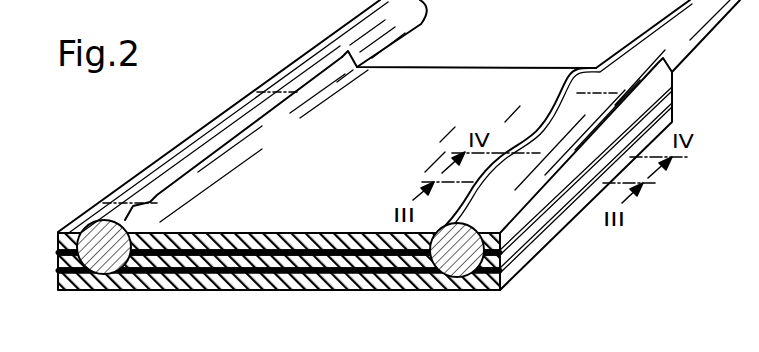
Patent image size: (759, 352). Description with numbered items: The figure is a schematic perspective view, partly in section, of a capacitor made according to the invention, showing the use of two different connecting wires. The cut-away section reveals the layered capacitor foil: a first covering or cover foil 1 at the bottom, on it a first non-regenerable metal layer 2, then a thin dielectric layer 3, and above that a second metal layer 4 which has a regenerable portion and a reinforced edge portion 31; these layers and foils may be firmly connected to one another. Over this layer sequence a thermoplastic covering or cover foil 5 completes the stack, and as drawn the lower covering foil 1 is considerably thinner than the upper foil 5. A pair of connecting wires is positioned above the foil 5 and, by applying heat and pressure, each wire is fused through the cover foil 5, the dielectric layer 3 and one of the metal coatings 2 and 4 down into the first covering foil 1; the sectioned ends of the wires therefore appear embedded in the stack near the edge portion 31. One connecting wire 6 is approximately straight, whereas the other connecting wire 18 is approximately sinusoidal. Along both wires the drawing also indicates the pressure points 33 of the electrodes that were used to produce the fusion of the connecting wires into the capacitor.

The first covering foil 1 is at (257, 289).
The first non-regenerable metal layer 2 is at (57, 271).
The thin dielectric layer 3 is at (408, 267).
The second metal layer 4 is at (283, 250).
The thermoplastic covering foil 5 is at (229, 236).
The connecting wire 6 is at (335, 33).
The connecting wire 18 is at (665, 37).
The reinforced edge portion 31 is at (460, 280).
The pressure points 33 is at (268, 77).